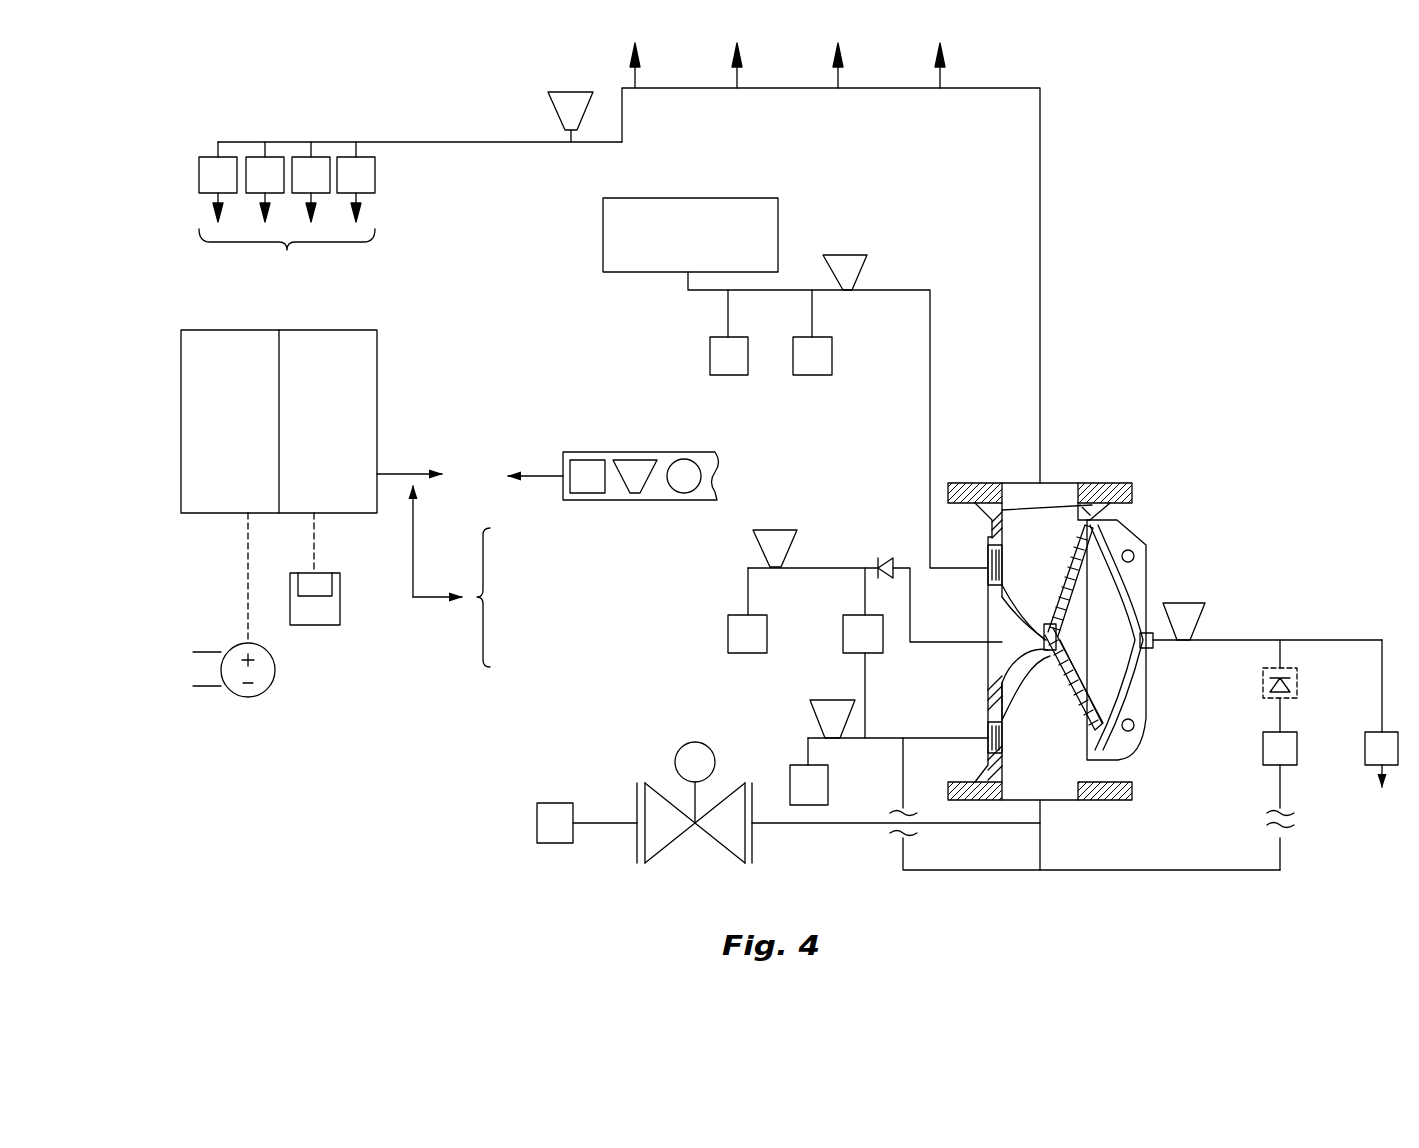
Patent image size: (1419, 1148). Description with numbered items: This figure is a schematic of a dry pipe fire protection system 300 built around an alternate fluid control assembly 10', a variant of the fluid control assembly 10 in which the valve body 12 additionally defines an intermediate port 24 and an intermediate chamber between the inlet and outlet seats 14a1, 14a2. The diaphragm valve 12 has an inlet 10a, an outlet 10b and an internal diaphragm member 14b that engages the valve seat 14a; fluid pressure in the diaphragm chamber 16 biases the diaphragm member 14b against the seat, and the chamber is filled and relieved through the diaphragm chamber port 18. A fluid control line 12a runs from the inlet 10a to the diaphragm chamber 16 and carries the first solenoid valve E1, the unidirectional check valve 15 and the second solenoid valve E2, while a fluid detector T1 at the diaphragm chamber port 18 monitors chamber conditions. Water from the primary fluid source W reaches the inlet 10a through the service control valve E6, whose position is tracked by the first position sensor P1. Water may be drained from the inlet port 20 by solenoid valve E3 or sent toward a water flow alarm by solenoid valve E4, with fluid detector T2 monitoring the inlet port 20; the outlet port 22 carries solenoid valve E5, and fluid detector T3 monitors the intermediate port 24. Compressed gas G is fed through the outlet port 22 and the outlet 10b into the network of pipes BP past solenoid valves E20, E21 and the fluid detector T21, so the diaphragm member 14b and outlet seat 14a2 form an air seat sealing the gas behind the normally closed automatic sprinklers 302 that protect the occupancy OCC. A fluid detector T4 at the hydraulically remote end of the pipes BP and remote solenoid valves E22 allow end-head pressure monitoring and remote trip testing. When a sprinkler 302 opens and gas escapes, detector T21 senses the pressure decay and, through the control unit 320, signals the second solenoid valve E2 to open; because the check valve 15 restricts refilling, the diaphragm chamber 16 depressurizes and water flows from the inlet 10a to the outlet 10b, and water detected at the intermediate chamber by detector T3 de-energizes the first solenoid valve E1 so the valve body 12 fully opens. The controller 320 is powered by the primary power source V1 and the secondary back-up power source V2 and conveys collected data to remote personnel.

The dry pipe fire protection system 300 is at (1285, 148).
The automatic sprinklers 302 is at (637, 82).
The network of pipes BP is at (1023, 88).
The fluid detector T4 is at (557, 112).
The electrically operated solenoid valves E22 is at (410, 217).
The compressed gas source G is at (795, 383).
The piping fluid detector T21 is at (845, 253).
The electrically operated solenoid valve E20 is at (729, 332).
The electrically operated solenoid valve E21 is at (812, 332).
The control unit 320 is at (378, 372).
The primary power source V1 is at (223, 666).
The secondary back-up power source V2 is at (196, 689).
The occupancy OCC is at (668, 415).
The fluid detector T3 is at (777, 527).
The outlet port solenoid valve E5 is at (747, 610).
The electrically controlled solenoid valve E4 is at (863, 653).
The inlet port fluid detector T2 is at (832, 698).
The electrically controlled solenoid valve E3 is at (809, 771).
The firefighting fluid source W is at (587, 823).
The service control valve E6 is at (645, 790).
The first position sensor P1 is at (695, 782).
The fluid control line 12a is at (965, 872).
The inlet 10a is at (1064, 818).
The fluid control assembly 10 is at (1137, 582).
The valve body 12 is at (1134, 491).
The outlet 10b is at (1059, 472).
The alternate fluid control assembly 10' is at (1101, 582).
The outlet port 22 is at (975, 557).
The inlet port 20 is at (977, 746).
The intermediate port 24 is at (1015, 652).
The valve seat 14a is at (1050, 655).
The inlet valve seat 14a1 is at (1047, 660).
The outlet valve seat 14a2 is at (1045, 614).
The diaphragm chamber 16 is at (1110, 607).
The diaphragm member 14b is at (1137, 590).
The diaphragm chamber port 18 is at (1168, 649).
The fluid detector T1 is at (1183, 600).
The check valve 15 is at (1297, 683).
The first solenoid valve E1 is at (1297, 745).
The second solenoid valve E2 is at (1365, 742).